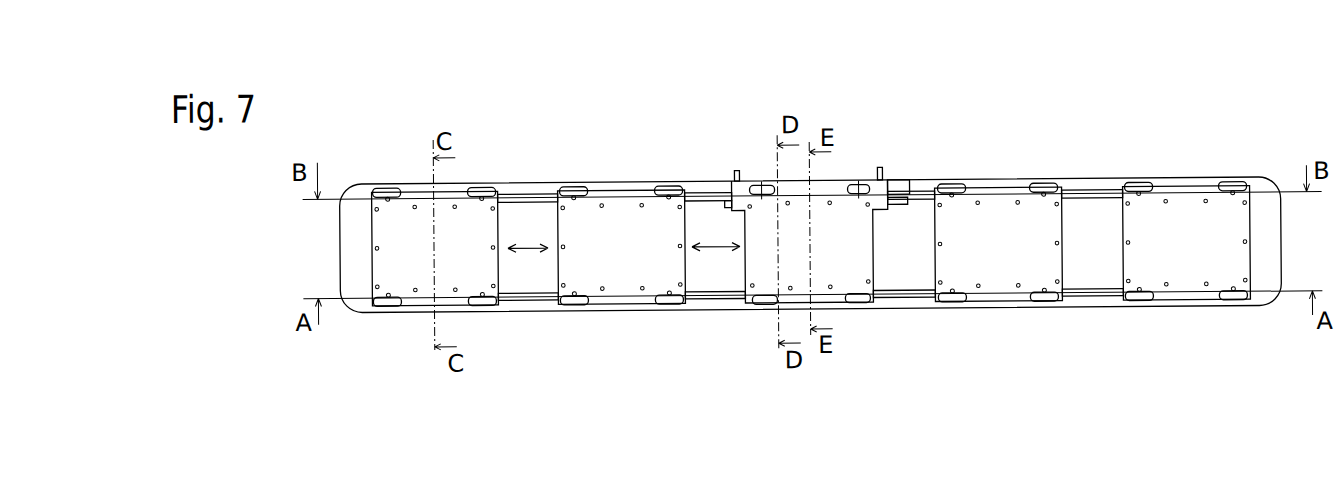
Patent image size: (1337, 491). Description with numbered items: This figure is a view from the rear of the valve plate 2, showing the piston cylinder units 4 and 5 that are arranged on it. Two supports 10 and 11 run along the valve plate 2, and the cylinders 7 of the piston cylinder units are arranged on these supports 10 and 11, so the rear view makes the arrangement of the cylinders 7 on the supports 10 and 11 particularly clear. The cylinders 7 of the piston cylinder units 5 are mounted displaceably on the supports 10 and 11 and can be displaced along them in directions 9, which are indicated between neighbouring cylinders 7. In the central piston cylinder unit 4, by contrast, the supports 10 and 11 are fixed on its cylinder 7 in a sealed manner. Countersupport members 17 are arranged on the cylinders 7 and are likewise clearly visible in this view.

The valve plate 2 is at (556, 187).
The central piston cylinder unit 4 is at (856, 276).
The piston cylinder unit 5 is at (408, 288).
The cylinder 7 is at (385, 257).
The directions 9 is at (533, 246).
The support 10 is at (516, 193).
The support 11 is at (531, 298).
The countersupport member 17 is at (388, 187).